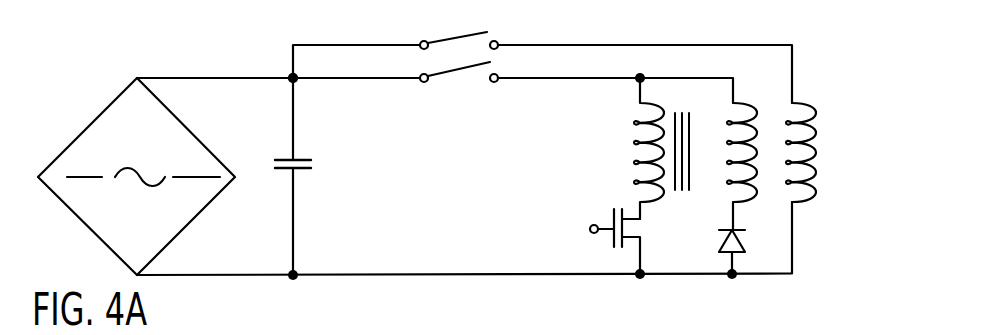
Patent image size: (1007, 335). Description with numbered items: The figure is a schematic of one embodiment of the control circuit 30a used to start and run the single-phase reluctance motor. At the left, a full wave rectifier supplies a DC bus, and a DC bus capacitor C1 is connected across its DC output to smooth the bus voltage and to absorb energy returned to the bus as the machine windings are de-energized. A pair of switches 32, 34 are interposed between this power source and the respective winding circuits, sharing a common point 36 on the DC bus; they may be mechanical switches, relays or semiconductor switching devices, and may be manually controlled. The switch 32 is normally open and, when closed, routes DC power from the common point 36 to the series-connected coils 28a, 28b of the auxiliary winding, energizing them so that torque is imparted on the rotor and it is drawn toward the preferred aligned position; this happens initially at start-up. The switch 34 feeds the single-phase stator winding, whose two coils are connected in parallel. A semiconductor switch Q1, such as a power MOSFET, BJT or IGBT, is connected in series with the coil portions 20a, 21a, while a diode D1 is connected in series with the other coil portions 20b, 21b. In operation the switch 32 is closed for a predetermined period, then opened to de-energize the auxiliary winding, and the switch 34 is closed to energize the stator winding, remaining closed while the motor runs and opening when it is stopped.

The common point 36 is at (293, 78).
The switch 32 is at (440, 40).
The switch 34 is at (445, 73).
The DC bus capacitor C1 is at (285, 172).
The control circuit 30a is at (710, 133).
The coil portion 20a is at (586, 148).
The coil portion 21a is at (637, 175).
The coil portion 20b is at (717, 137).
The coil portion 21b is at (757, 110).
The auxiliary winding coil 28a is at (849, 177).
The auxiliary winding coil 28b is at (800, 201).
The semiconductor switch Q1 is at (613, 238).
The diode D1 is at (723, 237).